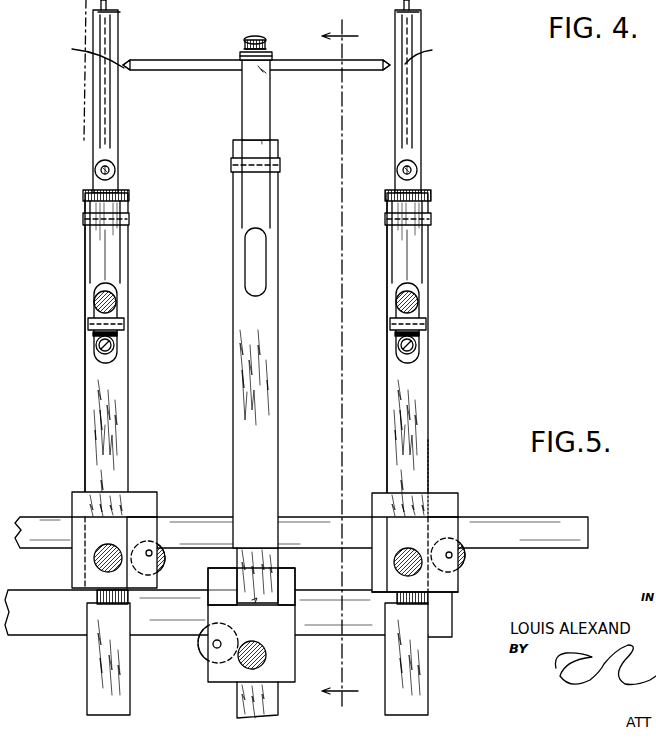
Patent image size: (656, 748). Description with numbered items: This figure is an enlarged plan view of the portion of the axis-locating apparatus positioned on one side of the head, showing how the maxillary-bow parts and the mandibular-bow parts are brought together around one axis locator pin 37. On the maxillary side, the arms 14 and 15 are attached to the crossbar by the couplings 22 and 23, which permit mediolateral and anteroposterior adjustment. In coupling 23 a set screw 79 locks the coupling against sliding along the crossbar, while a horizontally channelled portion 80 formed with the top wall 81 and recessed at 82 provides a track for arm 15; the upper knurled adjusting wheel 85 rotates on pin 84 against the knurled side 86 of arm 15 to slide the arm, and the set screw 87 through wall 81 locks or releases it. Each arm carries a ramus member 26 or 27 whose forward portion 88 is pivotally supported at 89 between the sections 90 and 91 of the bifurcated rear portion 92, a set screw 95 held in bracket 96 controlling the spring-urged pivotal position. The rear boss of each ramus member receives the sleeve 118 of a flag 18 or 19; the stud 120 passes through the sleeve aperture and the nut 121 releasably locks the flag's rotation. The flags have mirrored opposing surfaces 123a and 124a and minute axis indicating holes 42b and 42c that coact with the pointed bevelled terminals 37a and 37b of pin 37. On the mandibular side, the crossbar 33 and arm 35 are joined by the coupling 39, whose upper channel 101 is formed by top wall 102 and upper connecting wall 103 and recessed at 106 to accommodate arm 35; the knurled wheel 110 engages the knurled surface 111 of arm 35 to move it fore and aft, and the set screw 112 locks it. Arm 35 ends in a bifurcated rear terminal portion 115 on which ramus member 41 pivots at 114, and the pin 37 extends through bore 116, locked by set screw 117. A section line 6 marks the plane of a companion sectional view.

The section line 6 is at (340, 362).
The arm 14 is at (128, 428).
The arm 15 is at (428, 430).
The flag 18 is at (108, 7).
The flag 19 is at (412, 5).
The coupling 22 is at (62, 577).
The coupling 23 is at (459, 586).
The ramus member 26 is at (115, 262).
The ramus member 27 is at (440, 268).
The crossbar 33 is at (452, 612).
The arm 35 is at (278, 431).
The axis locator pin 37 is at (181, 62).
The bevelled terminal 37a is at (128, 62).
The bevelled terminal 37b is at (381, 62).
The coupling 39 is at (278, 700).
The ramus member 41 is at (262, 95).
The axis indicating hole 42b is at (84, 70).
The axis indicating hole 42c is at (432, 51).
The set screw 79 is at (103, 600).
The horizontally channelled portion 80 is at (140, 516).
The top wall 81 is at (145, 513).
The recess 82 is at (428, 490).
The pin 84 is at (149, 562).
The upper knurled adjusting wheel 85 is at (165, 541).
The knurled side 86 is at (428, 650).
The set screw 87 is at (95, 560).
The forward portion 88 is at (120, 243).
The pivot 89 is at (129, 222).
The section 90 is at (125, 286).
The section 91 is at (87, 265).
The bifurcated rear portion 92 is at (129, 197).
The set screw 95 is at (124, 325).
The bracket 96 is at (118, 341).
The channel 101 is at (218, 597).
The top wall 102 is at (212, 612).
The upper connecting wall 103 is at (285, 583).
The recess 106 is at (257, 604).
The knurled wheel 110 is at (198, 652).
The knurled surface 111 is at (236, 568).
The set screw 112 is at (262, 658).
The pivot 114 is at (288, 163).
The bifurcated rear terminal portion 115 is at (272, 210).
The bore 116 is at (264, 73).
The set screw 117 is at (263, 38).
The sleeve 118 is at (118, 121).
The stud 120 is at (118, 161).
The nut 121 is at (116, 176).
The mirrored surface 123a is at (119, 6).
The mirrored surface 124a is at (407, 8).